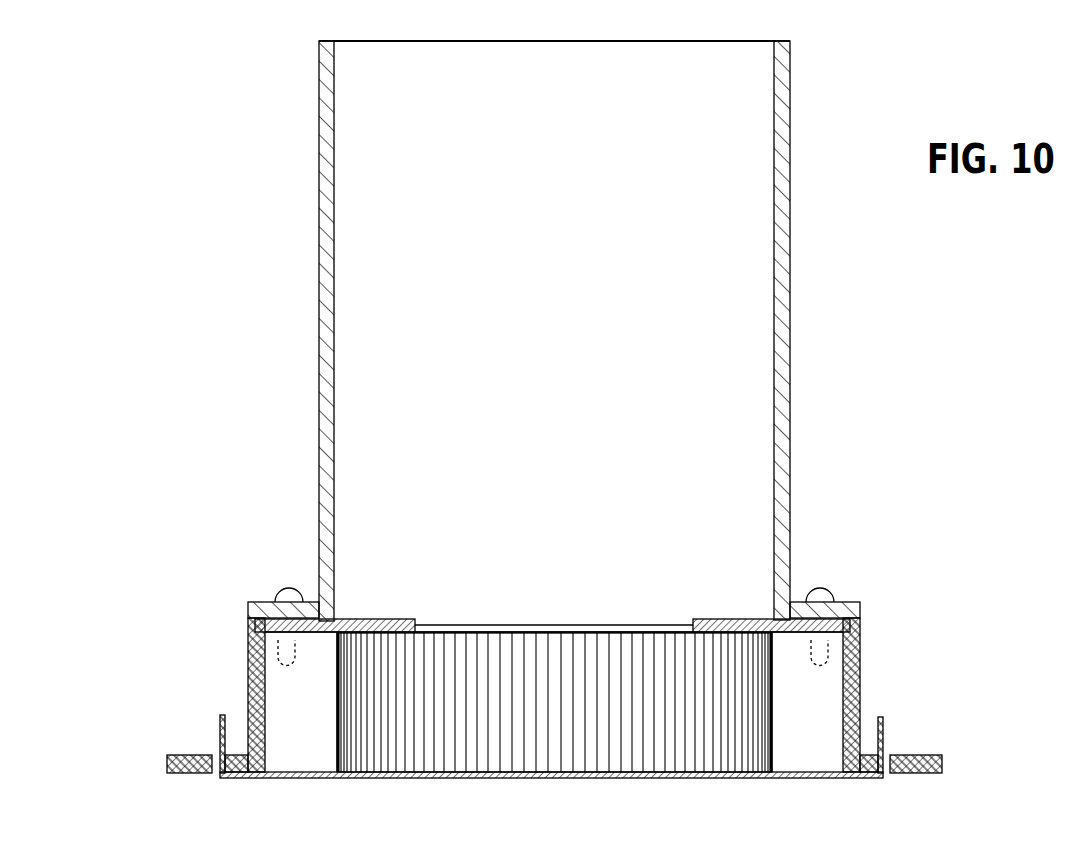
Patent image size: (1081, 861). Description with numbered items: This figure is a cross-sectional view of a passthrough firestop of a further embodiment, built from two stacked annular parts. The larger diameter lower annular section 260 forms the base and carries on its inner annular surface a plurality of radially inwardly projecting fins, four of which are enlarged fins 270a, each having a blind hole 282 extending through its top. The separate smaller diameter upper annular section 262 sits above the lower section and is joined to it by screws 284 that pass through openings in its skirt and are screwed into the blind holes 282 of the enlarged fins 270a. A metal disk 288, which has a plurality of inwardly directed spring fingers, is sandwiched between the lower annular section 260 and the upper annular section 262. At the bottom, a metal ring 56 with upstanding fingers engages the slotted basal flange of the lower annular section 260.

The upper annular section 262 is at (793, 360).
The lower annular section 260 is at (862, 697).
The metal disk 288 is at (378, 624).
The enlarged fin 270a is at (705, 757).
The blind hole 282 is at (828, 650).
The screw 284 is at (820, 594).
The metal ring 56 is at (855, 777).